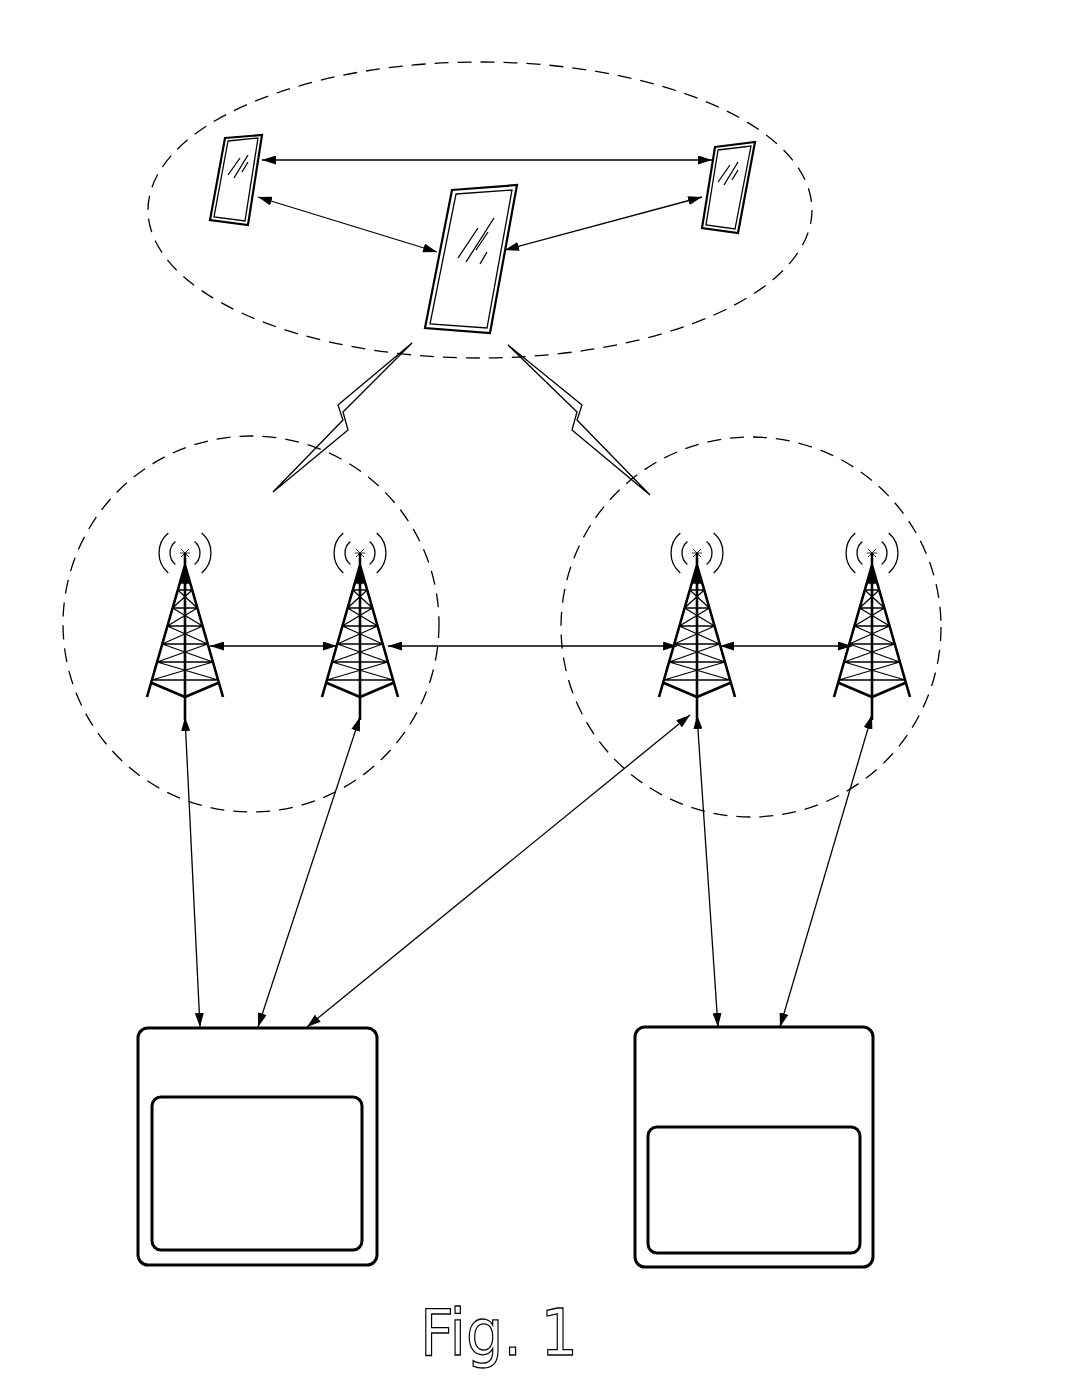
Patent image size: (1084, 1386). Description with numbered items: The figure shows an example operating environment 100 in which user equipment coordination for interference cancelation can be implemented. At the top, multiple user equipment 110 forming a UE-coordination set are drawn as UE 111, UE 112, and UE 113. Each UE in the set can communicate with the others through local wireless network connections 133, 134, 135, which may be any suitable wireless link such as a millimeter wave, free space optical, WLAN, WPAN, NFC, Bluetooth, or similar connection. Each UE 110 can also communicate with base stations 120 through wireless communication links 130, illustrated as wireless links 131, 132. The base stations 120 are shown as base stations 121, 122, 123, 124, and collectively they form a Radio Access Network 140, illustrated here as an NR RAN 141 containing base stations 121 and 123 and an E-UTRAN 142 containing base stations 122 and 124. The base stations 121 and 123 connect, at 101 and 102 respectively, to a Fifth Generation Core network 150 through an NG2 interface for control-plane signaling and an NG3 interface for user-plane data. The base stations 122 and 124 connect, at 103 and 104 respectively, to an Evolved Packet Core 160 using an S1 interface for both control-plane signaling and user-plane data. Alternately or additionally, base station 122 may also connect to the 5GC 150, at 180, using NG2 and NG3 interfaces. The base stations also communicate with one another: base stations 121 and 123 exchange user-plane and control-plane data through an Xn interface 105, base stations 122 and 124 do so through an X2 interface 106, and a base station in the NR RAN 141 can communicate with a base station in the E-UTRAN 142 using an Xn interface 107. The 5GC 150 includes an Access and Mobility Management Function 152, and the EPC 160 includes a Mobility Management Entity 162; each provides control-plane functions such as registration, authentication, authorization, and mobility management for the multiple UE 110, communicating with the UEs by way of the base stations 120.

The operating environment 100 is at (177, 50).
The user equipment 110 is at (735, 113).
The user equipment 111 is at (503, 285).
The user equipment 112 is at (267, 135).
The user equipment 113 is at (715, 145).
The local wireless network connection 133 is at (473, 160).
The local wireless network connection 134 is at (330, 217).
The local wireless network connection 135 is at (638, 208).
The wireless communication links 130 is at (585, 385).
The wireless link 131 is at (330, 420).
The wireless link 132 is at (602, 428).
The Radio Access Network 140 is at (503, 457).
The NR RAN 141 is at (397, 503).
The E-UTRAN 142 is at (612, 503).
The base stations 120 is at (247, 522).
The base station 121 is at (170, 612).
The base station 122 is at (683, 612).
The base station 123 is at (350, 612).
The base station 124 is at (862, 613).
The Xn interface 105 is at (298, 652).
The X2 interface 106 is at (822, 652).
The Xn interface 107 is at (535, 652).
The connection to 5GC 101 is at (190, 845).
The connection to 5GC 102 is at (328, 818).
The connection to EPC 103 is at (707, 867).
The connection to EPC 104 is at (827, 867).
The connection to 5GC 180 is at (477, 897).
The Fifth Generation Core network 150 is at (257, 1146).
The Access and Mobility Management Function 152 is at (257, 1173).
The Evolved Packet Core 160 is at (754, 1147).
The Mobility Management Entity 162 is at (754, 1190).